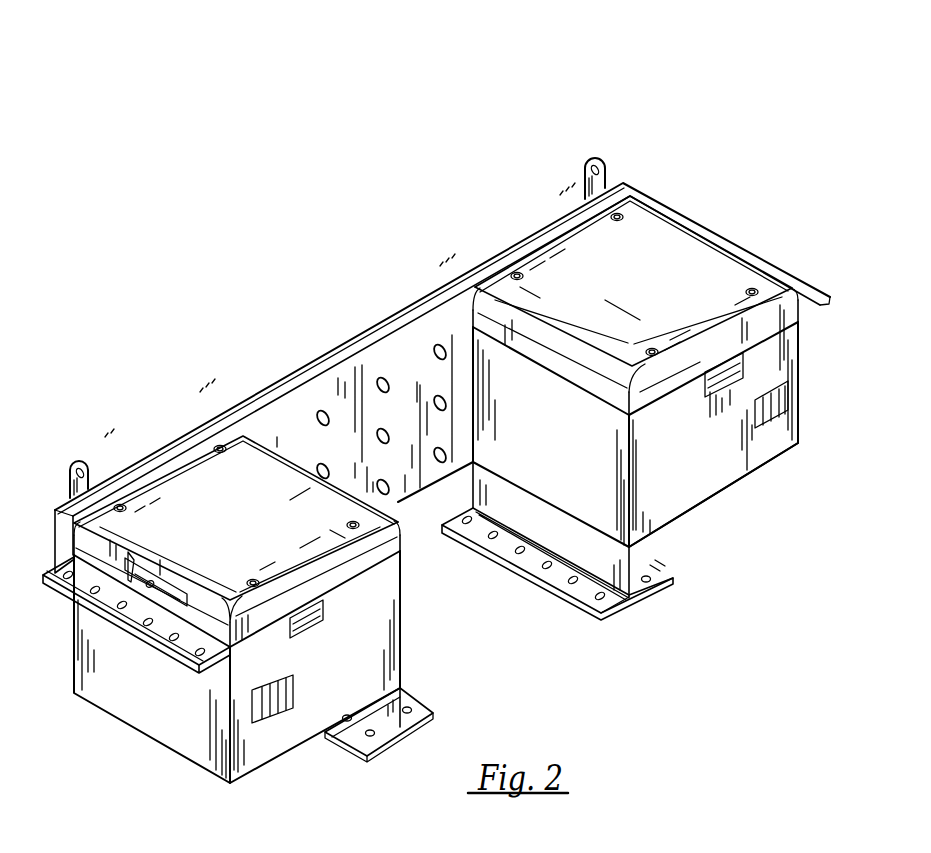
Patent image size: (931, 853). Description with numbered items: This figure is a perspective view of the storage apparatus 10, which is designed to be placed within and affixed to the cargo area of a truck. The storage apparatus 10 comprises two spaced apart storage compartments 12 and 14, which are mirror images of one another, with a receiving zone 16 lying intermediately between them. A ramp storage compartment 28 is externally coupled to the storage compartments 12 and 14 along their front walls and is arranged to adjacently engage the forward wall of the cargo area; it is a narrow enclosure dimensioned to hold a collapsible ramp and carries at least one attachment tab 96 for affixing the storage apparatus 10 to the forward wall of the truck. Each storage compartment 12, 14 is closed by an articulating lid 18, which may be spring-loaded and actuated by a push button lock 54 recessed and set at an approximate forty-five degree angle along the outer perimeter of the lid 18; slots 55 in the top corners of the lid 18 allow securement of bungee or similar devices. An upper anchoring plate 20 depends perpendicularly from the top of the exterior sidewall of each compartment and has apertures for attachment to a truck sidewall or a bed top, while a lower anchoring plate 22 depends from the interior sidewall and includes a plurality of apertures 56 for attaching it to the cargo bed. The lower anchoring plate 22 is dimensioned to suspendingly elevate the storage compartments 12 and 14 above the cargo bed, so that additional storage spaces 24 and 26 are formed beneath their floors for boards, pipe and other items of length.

The storage apparatus 10 is at (669, 126).
The storage compartment 12 is at (148, 765).
The storage compartment 14 is at (793, 467).
The receiving zone 16 is at (520, 647).
The articulating lid 18 is at (682, 245).
The upper anchoring plate 20 is at (63, 599).
The lower anchoring plate 22 is at (673, 572).
The storage space 24 is at (290, 765).
The storage space 26 is at (718, 500).
The ramp storage compartment 28 is at (378, 333).
The push button lock 54 is at (55, 511).
The slots 55 is at (216, 443).
The apertures 56 is at (655, 590).
The attachment tab 96 is at (77, 460).